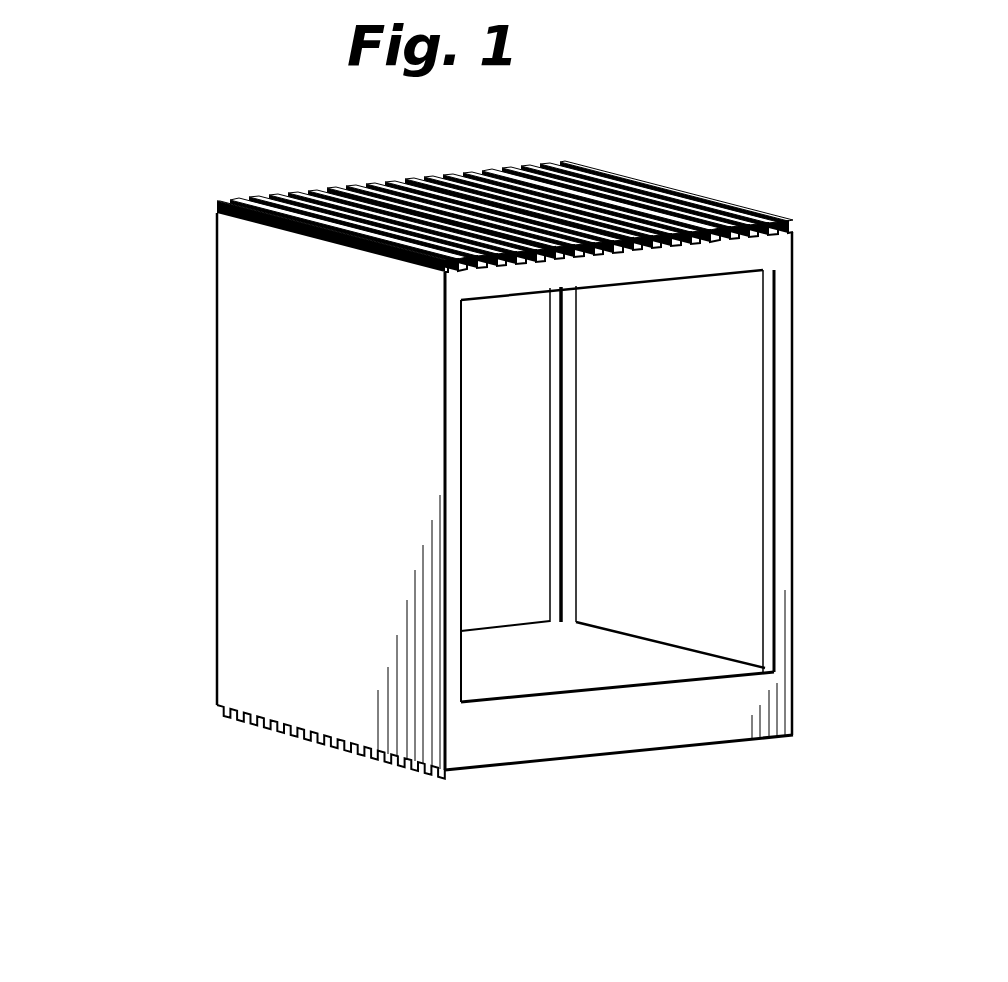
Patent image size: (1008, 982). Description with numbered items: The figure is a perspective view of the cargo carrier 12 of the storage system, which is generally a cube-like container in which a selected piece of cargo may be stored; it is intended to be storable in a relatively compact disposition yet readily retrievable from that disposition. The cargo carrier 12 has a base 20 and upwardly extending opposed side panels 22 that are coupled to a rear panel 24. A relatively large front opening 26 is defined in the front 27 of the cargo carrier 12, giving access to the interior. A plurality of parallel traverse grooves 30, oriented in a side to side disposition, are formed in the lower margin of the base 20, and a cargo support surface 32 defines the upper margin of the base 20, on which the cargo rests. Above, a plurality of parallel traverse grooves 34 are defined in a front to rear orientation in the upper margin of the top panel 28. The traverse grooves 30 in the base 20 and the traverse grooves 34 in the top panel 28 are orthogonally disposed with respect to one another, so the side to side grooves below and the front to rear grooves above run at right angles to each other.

The cargo carrier 12 is at (175, 245).
The base 20 is at (778, 706).
The side panels 22 is at (742, 498).
The rear panel 24 is at (530, 352).
The front opening 26 is at (720, 412).
The front 27 is at (782, 620).
The top panel 28 is at (318, 207).
The traverse grooves 30 is at (220, 705).
The cargo support surface 32 is at (540, 684).
The traverse grooves 34 is at (620, 185).